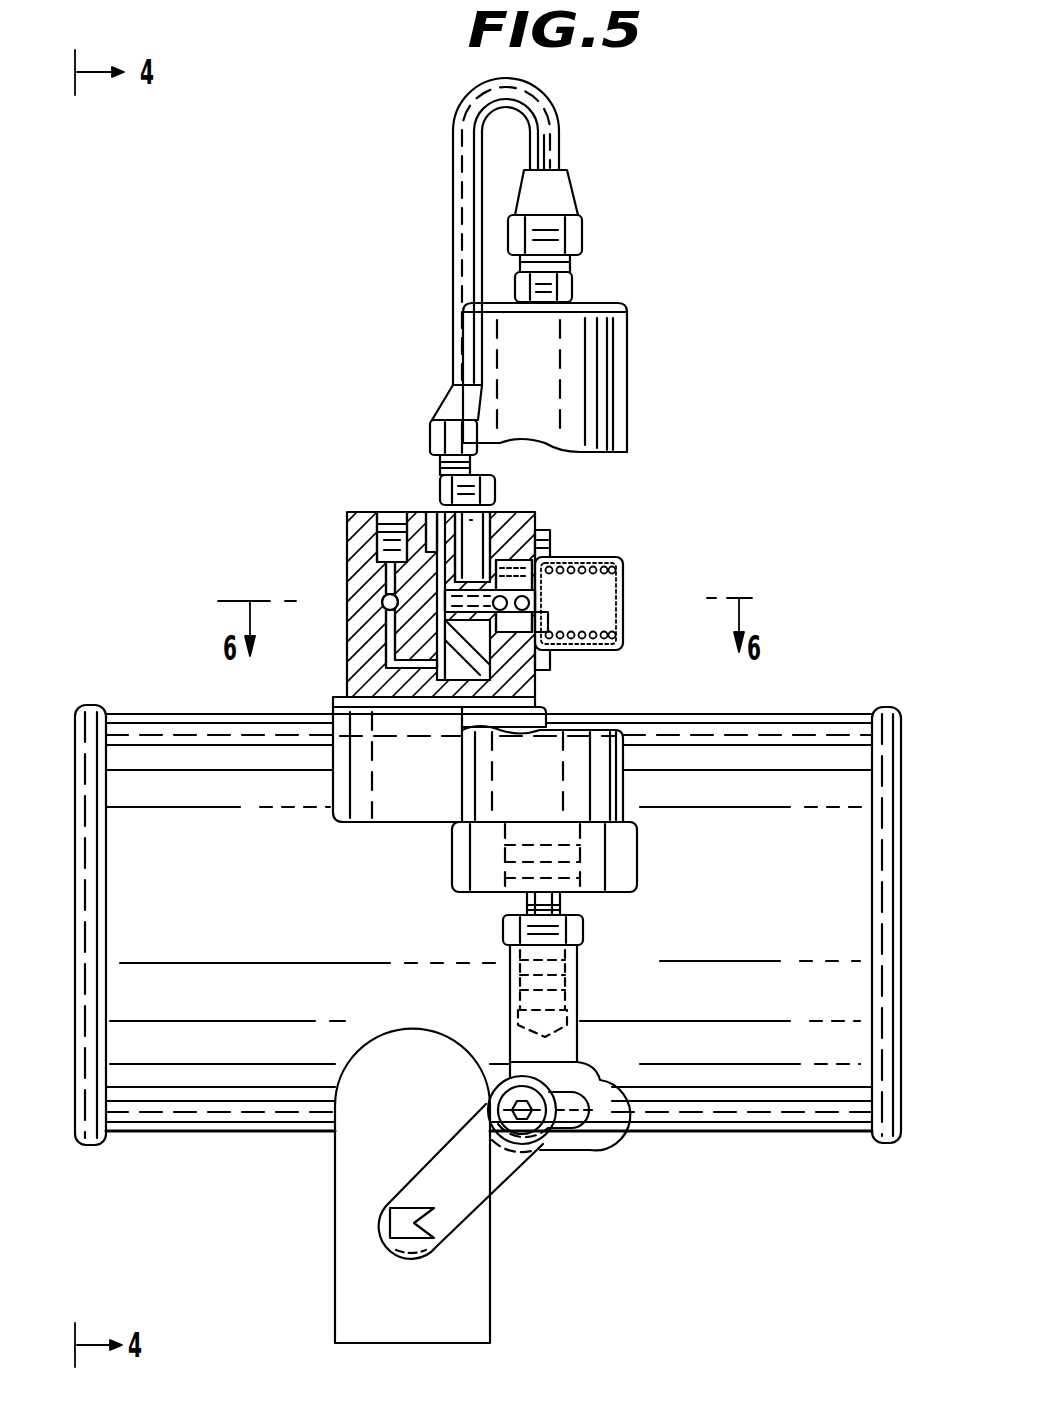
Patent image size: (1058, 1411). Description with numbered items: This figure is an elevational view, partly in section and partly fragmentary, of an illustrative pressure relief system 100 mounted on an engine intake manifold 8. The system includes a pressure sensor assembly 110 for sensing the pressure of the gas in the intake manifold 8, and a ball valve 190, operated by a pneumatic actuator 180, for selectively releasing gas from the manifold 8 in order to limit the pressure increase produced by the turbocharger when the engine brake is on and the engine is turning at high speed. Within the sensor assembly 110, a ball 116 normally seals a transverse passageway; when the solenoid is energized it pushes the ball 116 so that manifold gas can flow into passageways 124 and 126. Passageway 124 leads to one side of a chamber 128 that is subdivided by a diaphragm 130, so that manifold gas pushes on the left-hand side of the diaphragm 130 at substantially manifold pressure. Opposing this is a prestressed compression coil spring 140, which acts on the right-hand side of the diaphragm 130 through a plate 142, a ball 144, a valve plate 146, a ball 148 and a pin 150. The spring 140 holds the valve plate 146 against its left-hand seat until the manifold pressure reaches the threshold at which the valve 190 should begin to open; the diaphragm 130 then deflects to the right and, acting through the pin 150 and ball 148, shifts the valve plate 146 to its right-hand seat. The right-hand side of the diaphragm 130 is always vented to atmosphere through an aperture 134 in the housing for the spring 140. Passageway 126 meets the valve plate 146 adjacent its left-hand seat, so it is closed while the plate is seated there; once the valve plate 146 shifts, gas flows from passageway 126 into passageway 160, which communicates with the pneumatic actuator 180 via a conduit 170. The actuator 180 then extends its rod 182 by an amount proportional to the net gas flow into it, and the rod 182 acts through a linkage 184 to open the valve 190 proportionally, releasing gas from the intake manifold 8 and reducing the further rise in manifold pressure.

The intake manifold 8 is at (768, 1120).
The pressure relief system 100 is at (838, 455).
The pressure sensor assembly 110 is at (318, 488).
The ball 116 is at (384, 602).
The passageway 124 is at (382, 594).
The passageway 126 is at (372, 642).
The chamber 128 is at (428, 512).
The diaphragm 130 is at (392, 548).
The aperture 134 is at (626, 608).
The prestressed compression coil spring 140 is at (626, 591).
The plate 142 is at (598, 557).
The ball 144 is at (600, 652).
The valve plate 146 is at (546, 552).
The ball 148 is at (541, 651).
The pin 150 is at (382, 674).
The passageway 160 is at (500, 518).
The conduit 170 is at (460, 142).
The pneumatic actuator 180 is at (597, 380).
The rod 182 is at (568, 898).
The linkage 184 is at (505, 1165).
The ball valve 190 is at (336, 1290).